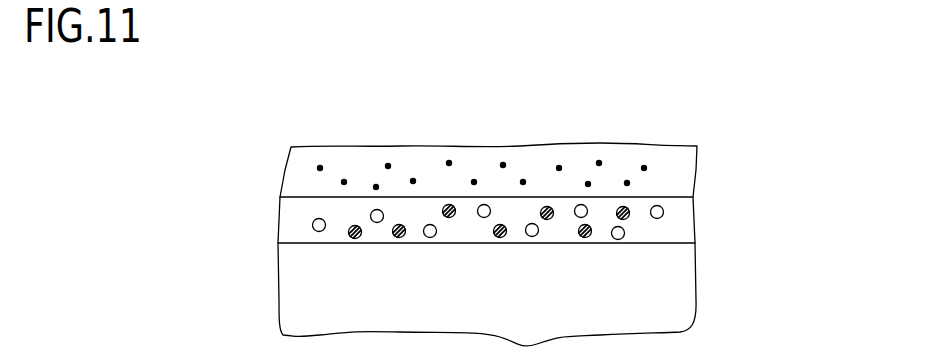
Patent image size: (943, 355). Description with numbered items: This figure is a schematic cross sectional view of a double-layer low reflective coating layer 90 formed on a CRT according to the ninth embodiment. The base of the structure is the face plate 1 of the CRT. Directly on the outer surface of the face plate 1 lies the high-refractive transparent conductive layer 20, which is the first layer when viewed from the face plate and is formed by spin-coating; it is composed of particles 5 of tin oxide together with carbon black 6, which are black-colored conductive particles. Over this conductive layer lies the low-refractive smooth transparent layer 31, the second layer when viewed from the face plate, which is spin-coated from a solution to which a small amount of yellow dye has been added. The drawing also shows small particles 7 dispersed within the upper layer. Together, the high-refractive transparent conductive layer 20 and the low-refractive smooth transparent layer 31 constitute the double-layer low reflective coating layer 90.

The face plate 1 is at (675, 283).
The high-refractive transparent conductive layer 20 is at (544, 254).
The low-refractive smooth transparent layer 31 is at (527, 149).
The double-layer low reflective coating layer 90 is at (481, 202).
The fine particles 7 is at (474, 180).
The carbon black 6 is at (394, 240).
The particles of SnO2 5 is at (532, 239).